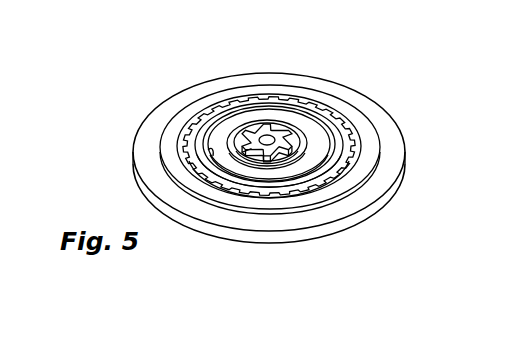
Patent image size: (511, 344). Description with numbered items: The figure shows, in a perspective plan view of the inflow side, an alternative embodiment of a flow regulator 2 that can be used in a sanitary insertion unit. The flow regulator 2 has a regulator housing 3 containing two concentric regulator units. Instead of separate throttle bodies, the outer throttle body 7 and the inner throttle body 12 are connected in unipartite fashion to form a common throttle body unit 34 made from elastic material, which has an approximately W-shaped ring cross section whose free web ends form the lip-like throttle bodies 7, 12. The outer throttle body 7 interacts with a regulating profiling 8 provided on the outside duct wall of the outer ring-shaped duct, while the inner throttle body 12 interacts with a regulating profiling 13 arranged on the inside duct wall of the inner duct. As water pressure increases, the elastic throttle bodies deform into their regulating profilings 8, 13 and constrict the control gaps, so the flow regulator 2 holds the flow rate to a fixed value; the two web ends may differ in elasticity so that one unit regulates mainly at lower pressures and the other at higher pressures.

The flow regulator 2 is at (287, 153).
The regulator housing 3 is at (390, 157).
The throttle body 7 is at (210, 112).
The regulating profiling 8 is at (214, 153).
The throttle body 12 is at (310, 134).
The regulating profiling 13 is at (259, 165).
The throttle body unit 34 is at (247, 93).